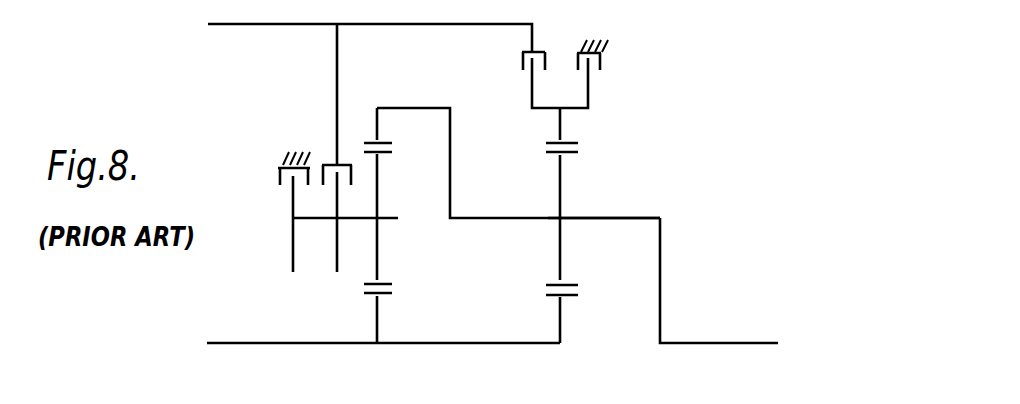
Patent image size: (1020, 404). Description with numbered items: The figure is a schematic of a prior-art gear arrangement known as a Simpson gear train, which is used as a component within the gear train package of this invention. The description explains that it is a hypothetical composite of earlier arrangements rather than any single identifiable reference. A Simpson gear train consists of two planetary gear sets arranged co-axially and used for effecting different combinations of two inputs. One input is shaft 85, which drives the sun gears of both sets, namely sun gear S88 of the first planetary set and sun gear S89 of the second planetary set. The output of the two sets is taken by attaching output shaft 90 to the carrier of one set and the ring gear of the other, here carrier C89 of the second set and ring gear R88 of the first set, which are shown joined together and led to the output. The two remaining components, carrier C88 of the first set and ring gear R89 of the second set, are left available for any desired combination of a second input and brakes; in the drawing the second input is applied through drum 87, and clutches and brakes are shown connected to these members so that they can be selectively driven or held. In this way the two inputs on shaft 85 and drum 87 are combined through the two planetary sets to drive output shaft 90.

The drum 87 is at (237, 27).
The shaft 85 is at (295, 345).
The output shaft 90 is at (695, 345).
The ring gear R88 is at (378, 108).
The carrier C88 is at (378, 266).
The sun gear S88 is at (378, 323).
The ring gear R89 is at (560, 140).
The carrier C89 is at (600, 217).
The sun gear S89 is at (560, 326).